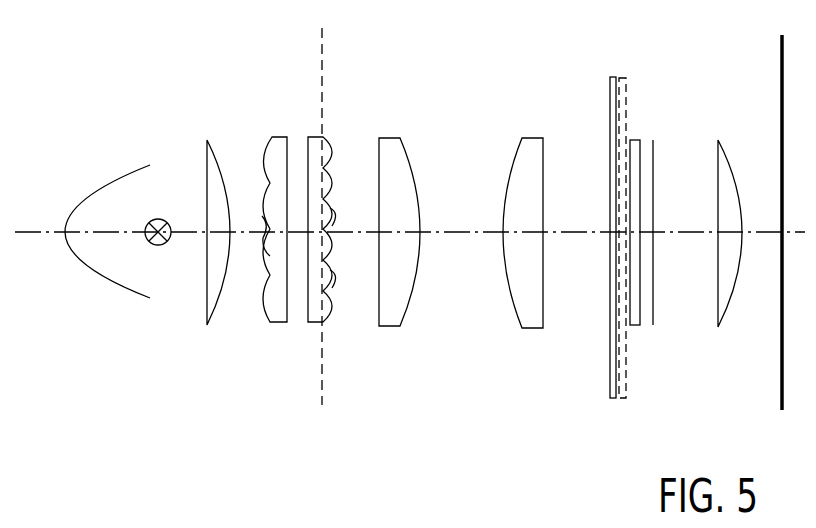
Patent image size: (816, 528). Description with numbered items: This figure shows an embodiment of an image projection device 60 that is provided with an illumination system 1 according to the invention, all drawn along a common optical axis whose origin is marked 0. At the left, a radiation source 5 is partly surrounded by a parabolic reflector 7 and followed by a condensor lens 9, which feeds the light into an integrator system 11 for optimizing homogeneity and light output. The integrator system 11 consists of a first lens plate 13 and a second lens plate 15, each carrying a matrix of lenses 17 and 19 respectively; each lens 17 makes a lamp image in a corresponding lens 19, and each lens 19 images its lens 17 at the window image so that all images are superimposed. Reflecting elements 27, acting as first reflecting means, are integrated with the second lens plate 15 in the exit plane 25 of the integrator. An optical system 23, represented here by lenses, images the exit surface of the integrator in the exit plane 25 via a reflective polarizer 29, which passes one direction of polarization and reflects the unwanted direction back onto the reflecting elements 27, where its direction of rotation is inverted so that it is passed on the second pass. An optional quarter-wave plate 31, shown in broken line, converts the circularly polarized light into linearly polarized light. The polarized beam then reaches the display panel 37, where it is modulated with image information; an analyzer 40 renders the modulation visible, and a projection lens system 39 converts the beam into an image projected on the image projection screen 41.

The optical axis origin 0 is at (33, 234).
The illumination system 1 is at (640, 427).
The radiation source 5 is at (158, 246).
The parabolic reflector 7 is at (128, 298).
The condensor lens 9 is at (213, 302).
The integrator system 11 is at (296, 356).
The first lens plate 13 is at (275, 322).
The second lens plate 15 is at (330, 322).
The lens of the first lens plate 17 is at (272, 198).
The lens of the second lens plate 19 is at (332, 276).
The optical system 23 is at (373, 73).
The exit plane 25 is at (322, 52).
The reflecting elements 27 is at (332, 214).
The reflective polarizer 29 is at (610, 378).
The λ/4 plate 31 is at (626, 378).
The display panel 37 is at (645, 98).
The projection lens system 39 is at (722, 148).
The analyzer 40 is at (653, 320).
The image projection screen 41 is at (781, 57).
The image projection device 60 is at (184, 451).